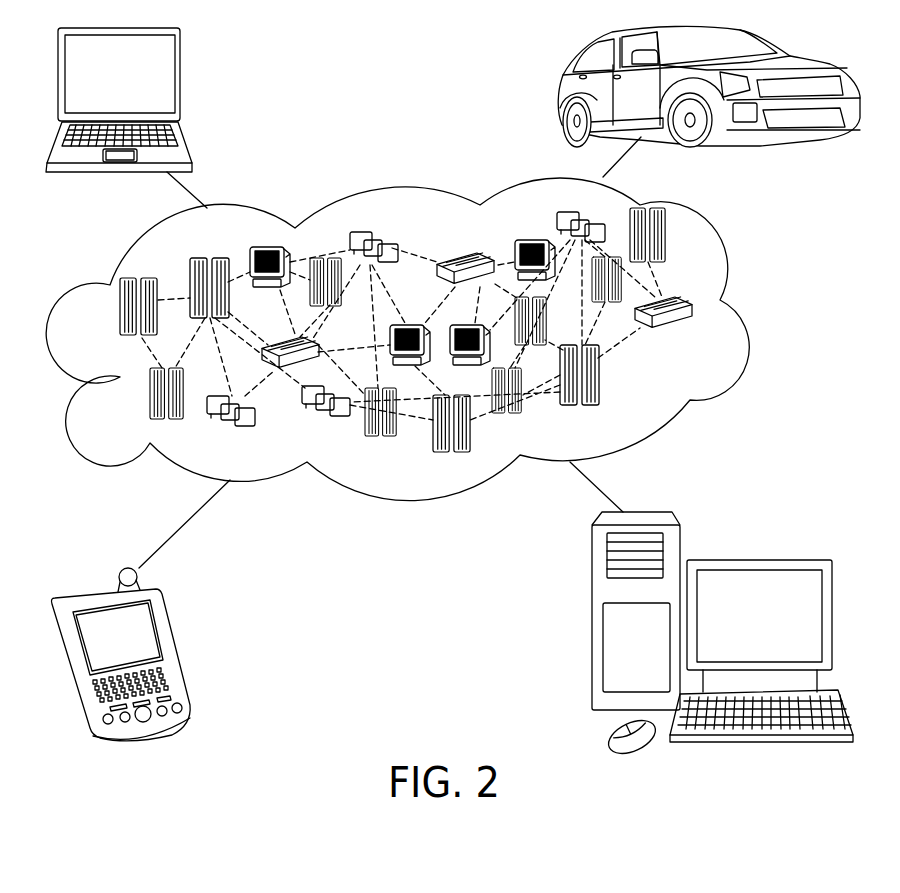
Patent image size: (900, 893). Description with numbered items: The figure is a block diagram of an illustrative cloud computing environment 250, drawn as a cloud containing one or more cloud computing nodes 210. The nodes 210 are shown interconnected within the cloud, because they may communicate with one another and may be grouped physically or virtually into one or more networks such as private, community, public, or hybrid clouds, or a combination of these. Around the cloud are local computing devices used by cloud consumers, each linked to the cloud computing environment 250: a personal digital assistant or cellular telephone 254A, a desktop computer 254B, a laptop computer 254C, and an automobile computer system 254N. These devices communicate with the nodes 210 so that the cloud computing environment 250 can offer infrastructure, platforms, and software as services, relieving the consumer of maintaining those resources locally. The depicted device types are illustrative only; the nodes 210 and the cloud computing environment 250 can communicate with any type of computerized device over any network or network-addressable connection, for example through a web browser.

The cloud computing nodes 210 is at (438, 339).
The cloud computing environment 250 is at (750, 313).
The personal digital assistant (PDA) or cellular telephone 254A is at (175, 645).
The desktop computer 254B is at (757, 558).
The laptop computer 254C is at (180, 82).
The automobile computer system 254N is at (561, 92).